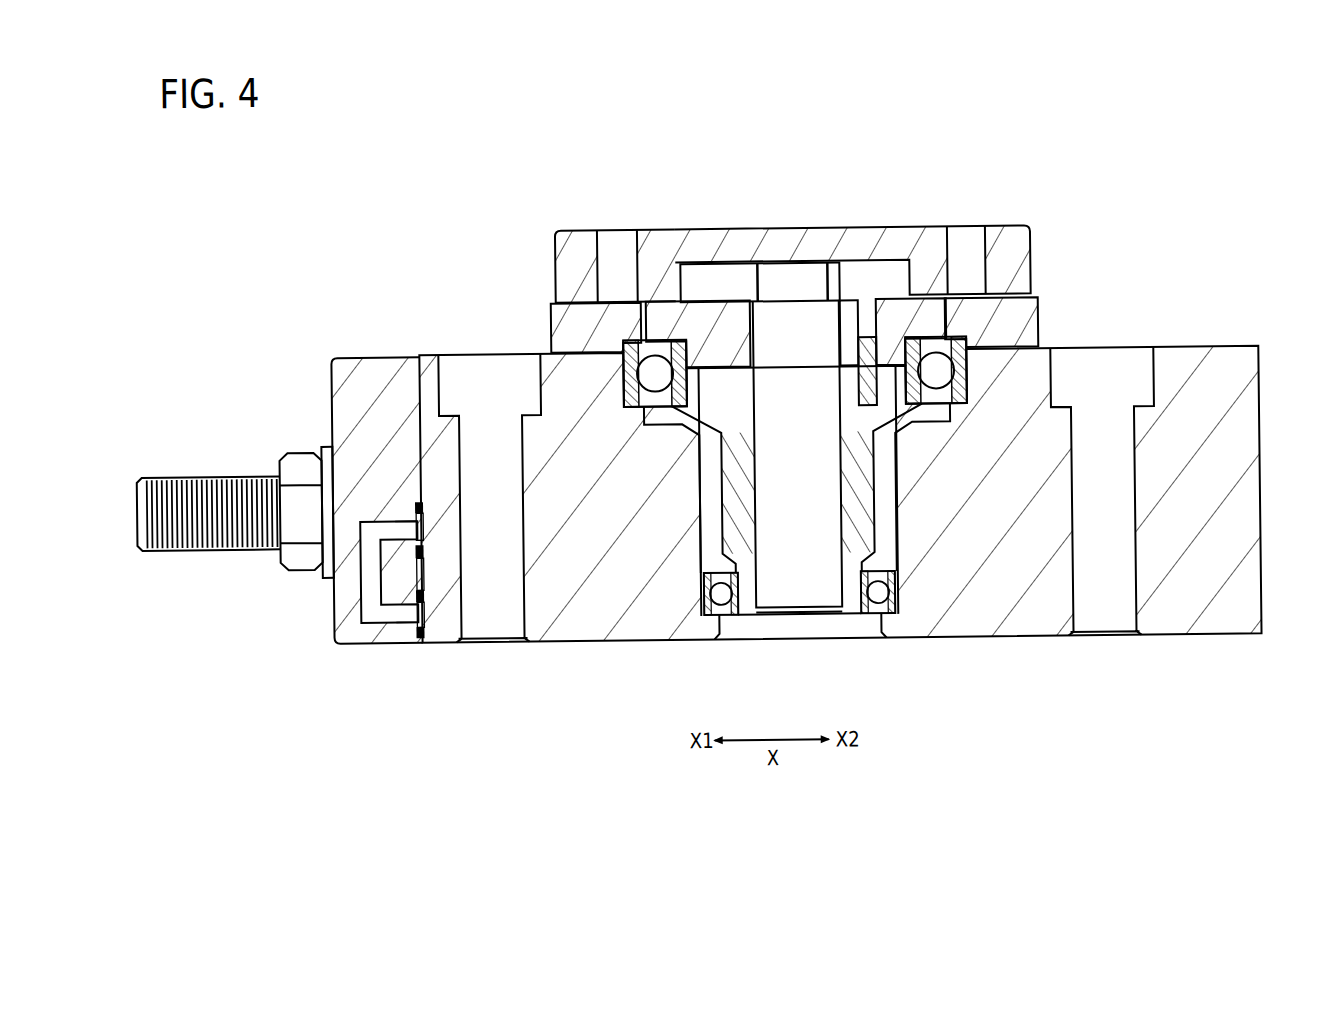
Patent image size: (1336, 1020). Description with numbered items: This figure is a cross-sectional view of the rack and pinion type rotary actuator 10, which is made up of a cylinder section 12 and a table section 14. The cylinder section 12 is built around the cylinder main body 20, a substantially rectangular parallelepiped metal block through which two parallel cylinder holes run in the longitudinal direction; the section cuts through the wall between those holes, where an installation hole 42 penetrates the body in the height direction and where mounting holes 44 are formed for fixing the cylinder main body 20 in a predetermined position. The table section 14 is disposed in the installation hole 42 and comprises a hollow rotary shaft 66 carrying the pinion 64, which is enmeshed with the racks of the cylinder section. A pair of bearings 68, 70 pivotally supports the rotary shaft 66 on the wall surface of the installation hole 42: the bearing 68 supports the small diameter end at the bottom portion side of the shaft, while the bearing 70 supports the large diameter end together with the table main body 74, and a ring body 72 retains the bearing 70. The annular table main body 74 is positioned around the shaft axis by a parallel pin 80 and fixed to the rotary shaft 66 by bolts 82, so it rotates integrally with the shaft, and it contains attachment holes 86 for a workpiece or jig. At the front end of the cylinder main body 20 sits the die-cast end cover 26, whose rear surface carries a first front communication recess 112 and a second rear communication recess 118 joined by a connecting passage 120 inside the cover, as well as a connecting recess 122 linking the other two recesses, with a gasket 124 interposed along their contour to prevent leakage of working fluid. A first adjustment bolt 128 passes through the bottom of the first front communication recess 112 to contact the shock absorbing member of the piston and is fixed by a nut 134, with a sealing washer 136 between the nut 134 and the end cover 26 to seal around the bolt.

The rotary actuator 10 is at (457, 167).
The cylinder section 12 is at (1236, 332).
The table section 14 is at (1023, 215).
The cylinder main body 20 is at (604, 628).
The end cover 26 is at (366, 628).
The installation hole 42 is at (772, 625).
The mounting holes 44 is at (496, 622).
The pinion 64 is at (861, 493).
The rotary shaft 66 is at (700, 432).
The bearing 68 is at (877, 591).
The bearing 70 is at (946, 374).
The ring body 72 is at (570, 320).
The table main body 74 is at (566, 260).
The parallel pin 80 is at (869, 393).
The bolts 82 is at (722, 279).
The attachment holes 86 is at (632, 243).
The first front communication recess 112 is at (425, 526).
The second rear communication recess 118 is at (427, 621).
The connecting passage 120 is at (369, 607).
The connecting recess 122 is at (425, 574).
The gasket 124 is at (425, 504).
The first adjustment bolt 128 is at (173, 470).
The nuts 134 is at (299, 461).
The sealing washers 136 is at (331, 573).